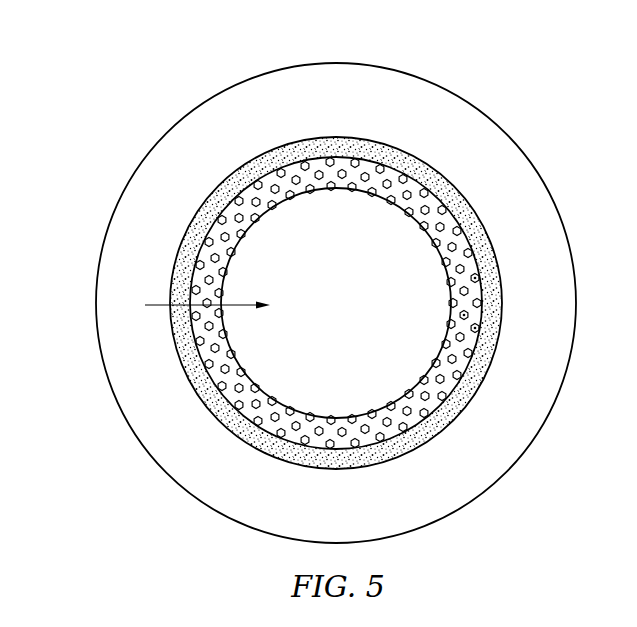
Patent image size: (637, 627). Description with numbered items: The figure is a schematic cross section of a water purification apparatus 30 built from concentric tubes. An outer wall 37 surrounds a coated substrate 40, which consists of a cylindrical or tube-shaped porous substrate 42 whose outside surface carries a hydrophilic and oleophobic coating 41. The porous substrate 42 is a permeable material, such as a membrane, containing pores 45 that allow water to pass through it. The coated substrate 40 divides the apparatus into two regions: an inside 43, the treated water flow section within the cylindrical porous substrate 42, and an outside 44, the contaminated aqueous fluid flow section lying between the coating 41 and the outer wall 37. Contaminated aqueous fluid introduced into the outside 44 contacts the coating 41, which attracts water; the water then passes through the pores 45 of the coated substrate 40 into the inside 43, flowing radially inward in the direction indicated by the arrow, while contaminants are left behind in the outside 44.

The water purification apparatus 30 is at (334, 303).
The outer wall 37 is at (147, 466).
The coated substrate 40 is at (334, 310).
The hydrophilic and oleophobic coating 41 is at (445, 423).
The porous substrate 42 is at (397, 303).
The inside (treated water flow section) 43 is at (350, 313).
The outside (contaminated aqueous fluid flow section) 44 is at (272, 128).
The pores 45 is at (475, 328).